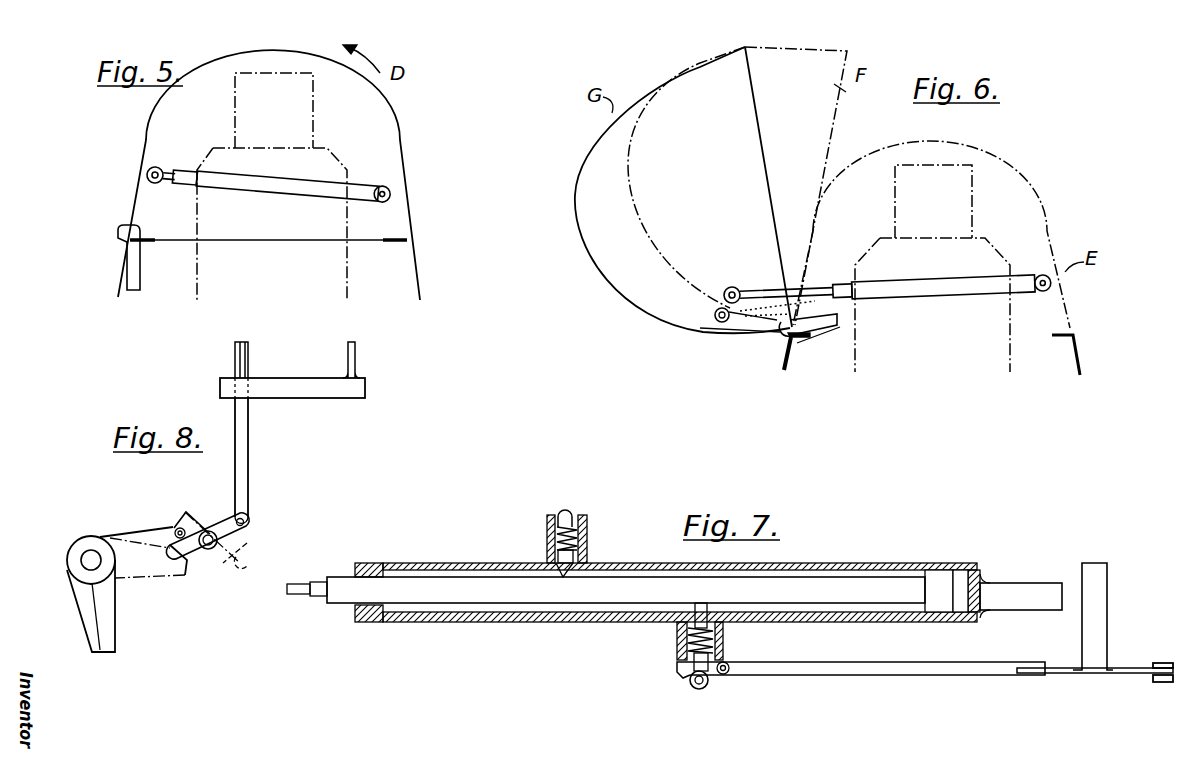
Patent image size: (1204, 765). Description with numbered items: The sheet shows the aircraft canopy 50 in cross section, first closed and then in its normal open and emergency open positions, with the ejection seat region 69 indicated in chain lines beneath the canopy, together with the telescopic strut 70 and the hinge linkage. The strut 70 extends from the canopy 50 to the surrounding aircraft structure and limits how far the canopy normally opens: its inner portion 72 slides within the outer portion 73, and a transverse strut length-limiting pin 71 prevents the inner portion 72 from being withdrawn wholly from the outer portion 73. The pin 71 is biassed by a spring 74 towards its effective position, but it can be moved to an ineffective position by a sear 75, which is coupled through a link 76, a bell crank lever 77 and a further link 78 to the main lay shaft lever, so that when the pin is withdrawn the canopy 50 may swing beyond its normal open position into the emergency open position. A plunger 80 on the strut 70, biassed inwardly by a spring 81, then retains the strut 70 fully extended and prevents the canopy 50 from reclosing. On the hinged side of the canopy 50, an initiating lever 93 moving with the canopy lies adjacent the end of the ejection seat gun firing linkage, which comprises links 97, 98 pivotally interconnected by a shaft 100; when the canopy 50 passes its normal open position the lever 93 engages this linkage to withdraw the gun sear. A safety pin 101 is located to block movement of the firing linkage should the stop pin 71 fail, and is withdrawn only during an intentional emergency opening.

In FIG. 6, the canopy 50 is at (613, 283).
In FIG. 5, the engine compartment 69 is at (287, 129).
In FIG. 6, the engine compartment 69 is at (944, 220).
In FIG. 5, the telescopic strut 70 is at (367, 193).
In FIG. 6, the telescopic strut 70 is at (1027, 285).
In FIG. 7, the telescopic strut 70 is at (871, 561).
In FIG. 7, the strut length-limiting pin 71 is at (707, 608).
In FIG. 7, the inner portion 72 is at (345, 595).
In FIG. 7, the outer portion 73 is at (1012, 590).
In FIG. 7, the spring 74 is at (688, 638).
In FIG. 7, the sear 75 is at (677, 667).
In FIG. 7, the link 76 is at (947, 668).
In FIG. 7, the bell crank lever 77 is at (1057, 668).
In FIG. 7, the further link 78 is at (1158, 663).
In FIG. 7, the plunger 80 is at (547, 562).
In FIG. 7, the spring 81 is at (587, 533).
In FIG. 5, the initiating lever 93 is at (137, 267).
In FIG. 6, the initiating lever 93 is at (823, 328).
In FIG. 8, the initiating lever 93 is at (138, 533).
In FIG. 8, the link 97 is at (247, 532).
In FIG. 8, the link 98 is at (250, 462).
In FIG. 8, the shaft 100 is at (327, 390).
In FIG. 8, the safety pin 101 is at (178, 522).